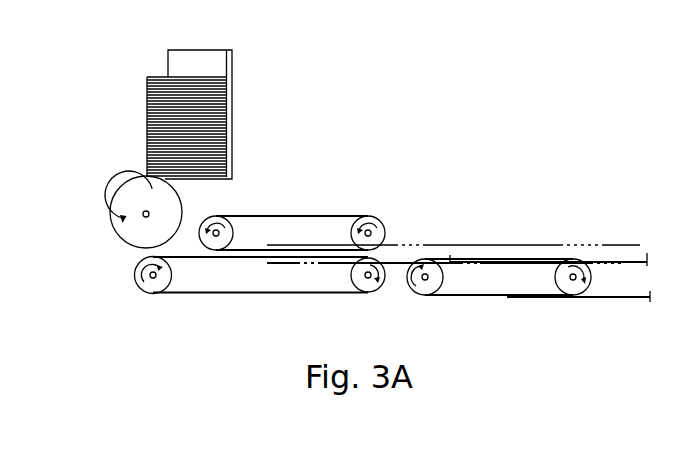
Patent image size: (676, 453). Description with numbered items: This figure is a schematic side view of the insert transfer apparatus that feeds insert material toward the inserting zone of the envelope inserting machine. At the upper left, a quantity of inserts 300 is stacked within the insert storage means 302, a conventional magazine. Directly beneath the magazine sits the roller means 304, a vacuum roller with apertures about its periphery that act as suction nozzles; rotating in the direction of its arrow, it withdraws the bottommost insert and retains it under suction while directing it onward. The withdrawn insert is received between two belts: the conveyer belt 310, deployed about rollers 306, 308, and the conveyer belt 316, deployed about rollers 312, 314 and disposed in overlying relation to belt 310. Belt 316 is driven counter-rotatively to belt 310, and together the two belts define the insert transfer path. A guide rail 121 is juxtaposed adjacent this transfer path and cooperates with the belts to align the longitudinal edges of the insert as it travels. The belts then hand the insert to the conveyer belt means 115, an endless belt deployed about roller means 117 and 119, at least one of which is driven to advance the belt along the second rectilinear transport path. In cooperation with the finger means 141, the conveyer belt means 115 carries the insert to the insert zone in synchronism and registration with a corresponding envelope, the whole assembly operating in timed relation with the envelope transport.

The inserts 300 is at (155, 77).
The insert storage means 302 is at (233, 82).
The roller means 304 is at (126, 190).
The roller 306 is at (158, 288).
The roller 308 is at (351, 274).
The conveyer belt 310 is at (237, 293).
The roller 312 is at (233, 230).
The roller 314 is at (363, 215).
The conveyer belt 316 is at (255, 213).
The guide rail 121 is at (415, 245).
The conveyer belt means 115 is at (477, 258).
The roller means 117 is at (443, 276).
The roller means 119 is at (591, 277).
The finger means 141 is at (630, 259).